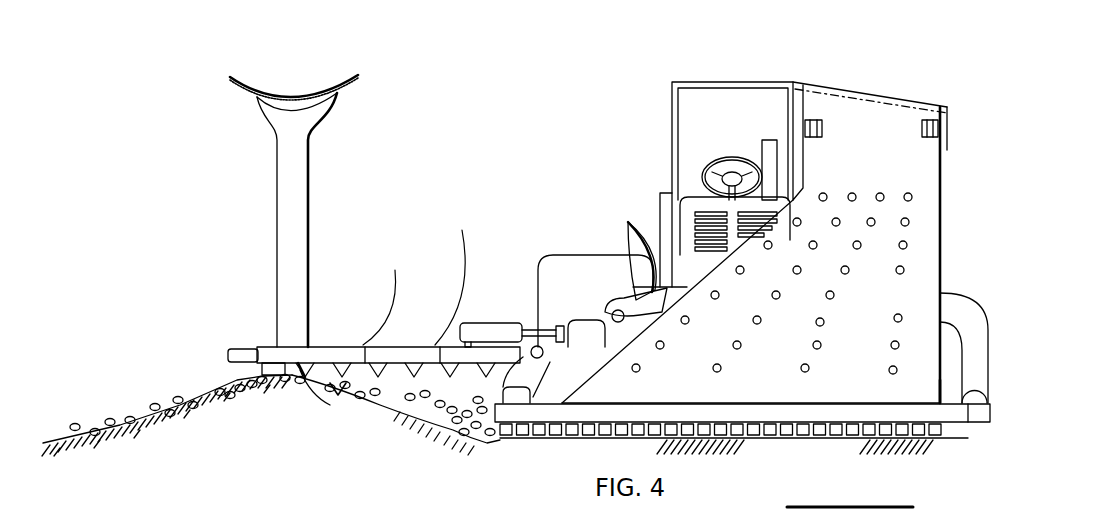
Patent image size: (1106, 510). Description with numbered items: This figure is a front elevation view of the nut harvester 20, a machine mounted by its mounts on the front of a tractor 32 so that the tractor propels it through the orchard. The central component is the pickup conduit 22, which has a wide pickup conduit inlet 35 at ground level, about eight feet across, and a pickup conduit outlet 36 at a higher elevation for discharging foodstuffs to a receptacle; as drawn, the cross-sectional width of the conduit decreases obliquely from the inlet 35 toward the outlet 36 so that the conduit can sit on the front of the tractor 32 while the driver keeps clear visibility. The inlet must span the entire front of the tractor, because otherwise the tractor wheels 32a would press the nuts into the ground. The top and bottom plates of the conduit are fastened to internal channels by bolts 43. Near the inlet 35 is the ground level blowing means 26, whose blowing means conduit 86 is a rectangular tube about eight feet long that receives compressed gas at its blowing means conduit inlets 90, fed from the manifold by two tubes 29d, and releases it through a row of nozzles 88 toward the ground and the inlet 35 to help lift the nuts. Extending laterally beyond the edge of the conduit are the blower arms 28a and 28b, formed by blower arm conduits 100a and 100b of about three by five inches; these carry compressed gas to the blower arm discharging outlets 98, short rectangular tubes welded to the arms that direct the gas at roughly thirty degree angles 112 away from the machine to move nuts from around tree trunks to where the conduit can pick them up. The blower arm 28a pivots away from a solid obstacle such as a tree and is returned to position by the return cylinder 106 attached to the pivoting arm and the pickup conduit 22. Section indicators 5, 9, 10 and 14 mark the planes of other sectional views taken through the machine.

The section line 5- 5 is at (265, 100).
The section line 9- 9 is at (198, 372).
The section line 10- 10 is at (297, 490).
The section line 14- 14 is at (965, 82).
The nut harvester 20 is at (993, 226).
The pickup conduit 22 is at (943, 252).
The ground level blowing means 26 is at (993, 413).
The blower arm 28a is at (328, 344).
The blower arm 28b is at (406, 344).
The tubes 29d is at (632, 247).
The tractor 32 is at (656, 171).
The tractor wheels 32a is at (560, 265).
The pickup conduit inlet 35 is at (943, 396).
The pickup conduit outlet 36 is at (943, 158).
The bolts 43 is at (906, 271).
The blowing means conduit 86 is at (972, 416).
The nozzles 88 is at (850, 434).
The blowing means conduit inlets 90 is at (510, 405).
The blower arm discharging outlets 98 is at (300, 370).
The blower arm conduit 100a is at (398, 272).
The blower arm conduit 100b is at (462, 232).
The return cylinder 106 is at (482, 315).
The angles 112 is at (336, 392).